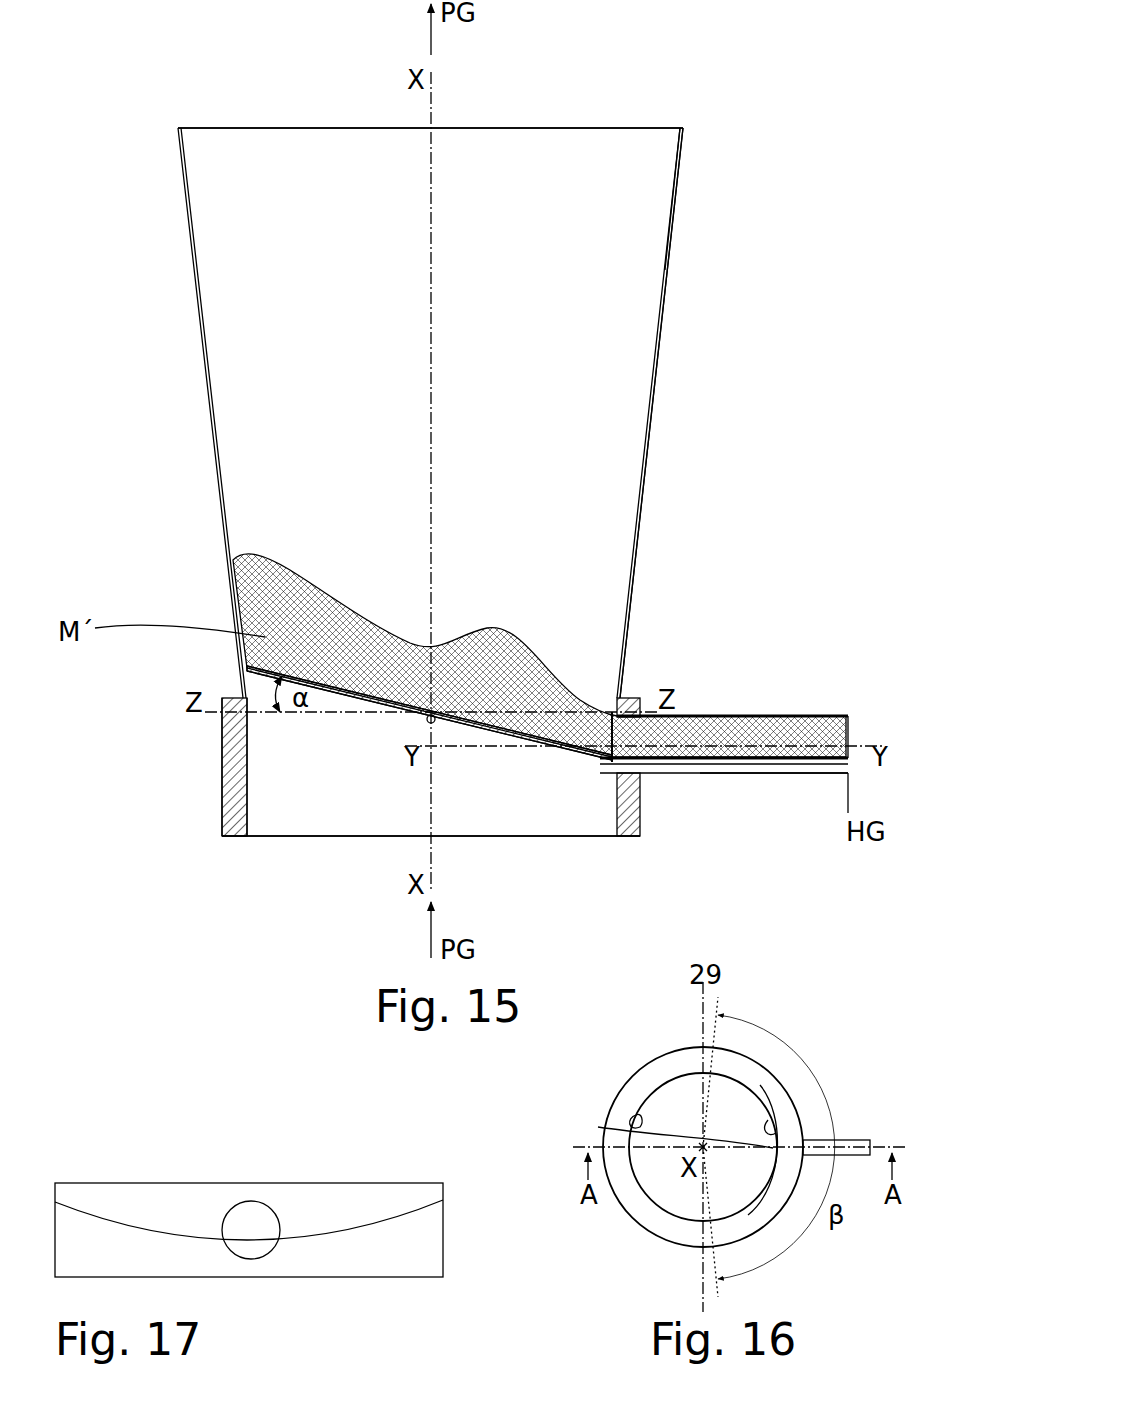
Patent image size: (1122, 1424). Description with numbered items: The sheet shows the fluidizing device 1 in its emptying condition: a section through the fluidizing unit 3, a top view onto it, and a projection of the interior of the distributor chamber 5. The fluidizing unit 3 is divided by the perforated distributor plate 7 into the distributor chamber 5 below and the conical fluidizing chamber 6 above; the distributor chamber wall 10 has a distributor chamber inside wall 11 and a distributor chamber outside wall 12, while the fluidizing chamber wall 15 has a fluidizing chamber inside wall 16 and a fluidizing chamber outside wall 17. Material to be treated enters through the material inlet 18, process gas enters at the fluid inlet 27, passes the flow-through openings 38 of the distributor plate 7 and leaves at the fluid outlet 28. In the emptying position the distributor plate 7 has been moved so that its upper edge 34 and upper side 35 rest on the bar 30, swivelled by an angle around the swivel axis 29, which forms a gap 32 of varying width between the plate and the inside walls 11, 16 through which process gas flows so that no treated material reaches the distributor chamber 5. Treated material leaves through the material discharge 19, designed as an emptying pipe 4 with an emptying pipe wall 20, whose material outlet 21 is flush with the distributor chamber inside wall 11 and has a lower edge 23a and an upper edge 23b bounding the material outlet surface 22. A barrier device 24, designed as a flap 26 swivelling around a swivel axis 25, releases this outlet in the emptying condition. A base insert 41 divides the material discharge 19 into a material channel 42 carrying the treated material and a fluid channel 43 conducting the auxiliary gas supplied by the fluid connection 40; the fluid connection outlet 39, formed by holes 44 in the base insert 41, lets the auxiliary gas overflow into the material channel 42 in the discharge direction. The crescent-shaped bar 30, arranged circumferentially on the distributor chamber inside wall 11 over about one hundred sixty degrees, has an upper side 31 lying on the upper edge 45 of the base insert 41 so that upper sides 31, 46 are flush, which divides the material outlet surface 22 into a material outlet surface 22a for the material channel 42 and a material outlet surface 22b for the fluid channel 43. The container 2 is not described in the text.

In FIG. 15, the fluidizing device 1 is at (804, 100).
In FIG. 16, the fluidizing device 1 is at (835, 1013).
In FIG. 15, the container 2 is at (98, 362).
In FIG. 15, the fluidizing unit 3 is at (680, 530).
In FIG. 16, the fluidizing unit 3 is at (703, 1250).
In FIG. 16, the emptying pipe 4 is at (844, 1160).
In FIG. 15, the distributor chamber 5 is at (221, 769).
In FIG. 16, the distributor chamber 5 is at (663, 1190).
In FIG. 17, the distributor chamber 5 is at (95, 1175).
In FIG. 15, the fluidizing chamber 6 is at (668, 275).
In FIG. 16, the fluidizing chamber 6 is at (788, 1087).
In FIG. 15, the distributor plate 7 is at (496, 722).
In FIG. 15, the distributor chamber wall 10 is at (632, 840).
In FIG. 15, the distributor chamber inside wall 11 is at (248, 824).
In FIG. 16, the distributor chamber inside wall 11 is at (773, 1118).
In FIG. 17, the distributor chamber inside wall 11 is at (396, 1203).
In FIG. 15, the distributor chamber outside wall 12 is at (222, 824).
In FIG. 15, the fluidizing chamber wall 15 is at (682, 172).
In FIG. 15, the fluidizing chamber inside wall 16 is at (677, 166).
In FIG. 16, the fluidizing chamber inside wall 16 is at (640, 1125).
In FIG. 15, the fluidizing chamber outside wall 17 is at (684, 148).
In FIG. 15, the material inlet 18 is at (308, 126).
In FIG. 15, the material discharge 19 is at (810, 716).
In FIG. 16, the material discharge 19 is at (845, 1140).
In FIG. 15, the emptying pipe wall 20 is at (834, 716).
In FIG. 15, the material outlet 21 is at (783, 710).
In FIG. 17, the material outlet 21 is at (278, 1205).
In FIG. 15, the material outlet surface 22 is at (575, 748).
In FIG. 16, the material outlet surface 22 is at (625, 1140).
In FIG. 17, the material outlet surface assigned to the material channel 22a is at (235, 1214).
In FIG. 17, the material outlet surface assigned to the fluid channel 22b is at (236, 1248).
In FIG. 15, the lower edge of the material outlet 23a is at (641, 786).
In FIG. 15, the upper edge of the material outlet 23b is at (640, 714).
In FIG. 15, the barrier device 24 is at (648, 713).
In FIG. 15, the swivel axis of the flap 25 is at (602, 708).
In FIG. 15, the flap 26 is at (670, 716).
In FIG. 15, the fluid inlet 27 is at (506, 840).
In FIG. 15, the fluid outlet 28 is at (536, 126).
In FIG. 15, the swivel axis 29 is at (424, 723).
In FIG. 15, the bar 30 is at (611, 768).
In FIG. 16, the bar 30 is at (758, 1202).
In FIG. 17, the bar 30 is at (418, 1212).
In FIG. 15, the upper side of the bar 31 is at (628, 751).
In FIG. 16, the upper side of the bar 31 is at (773, 1160).
In FIG. 15, the gap 32 is at (238, 666).
In FIG. 15, the upper edge of the distributor plate 34 is at (606, 765).
In FIG. 15, the upper side of the distributor plate 35 is at (328, 675).
In FIG. 15, the flow-through openings 38 is at (460, 732).
In FIG. 15, the fluid connection outlet 39 is at (627, 764).
In FIG. 15, the fluid connection 40 is at (757, 772).
In FIG. 15, the base insert 41 is at (850, 755).
In FIG. 17, the base insert 41 is at (263, 1238).
In FIG. 15, the material channel 42 is at (838, 732).
In FIG. 17, the material channel 42 is at (253, 1210).
In FIG. 15, the fluid channel 43 is at (803, 792).
In FIG. 17, the fluid channel 43 is at (247, 1252).
In FIG. 15, the holes 44 is at (621, 733).
In FIG. 15, the upper edge of the base insert 45 is at (633, 772).
In FIG. 15, the upper side of the base insert 46 is at (798, 754).